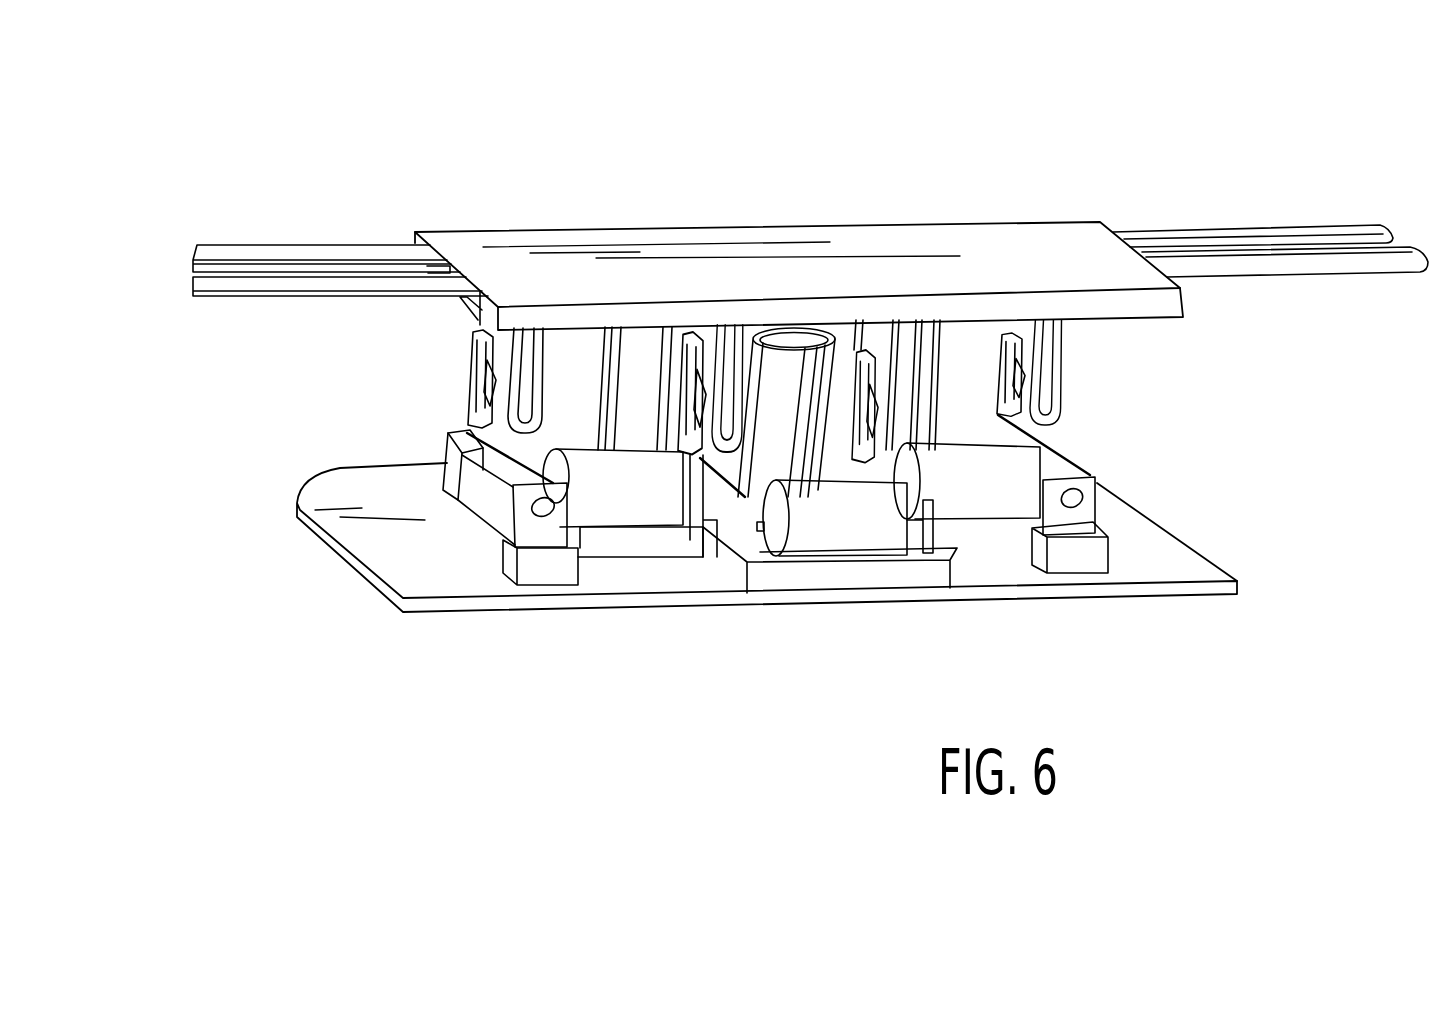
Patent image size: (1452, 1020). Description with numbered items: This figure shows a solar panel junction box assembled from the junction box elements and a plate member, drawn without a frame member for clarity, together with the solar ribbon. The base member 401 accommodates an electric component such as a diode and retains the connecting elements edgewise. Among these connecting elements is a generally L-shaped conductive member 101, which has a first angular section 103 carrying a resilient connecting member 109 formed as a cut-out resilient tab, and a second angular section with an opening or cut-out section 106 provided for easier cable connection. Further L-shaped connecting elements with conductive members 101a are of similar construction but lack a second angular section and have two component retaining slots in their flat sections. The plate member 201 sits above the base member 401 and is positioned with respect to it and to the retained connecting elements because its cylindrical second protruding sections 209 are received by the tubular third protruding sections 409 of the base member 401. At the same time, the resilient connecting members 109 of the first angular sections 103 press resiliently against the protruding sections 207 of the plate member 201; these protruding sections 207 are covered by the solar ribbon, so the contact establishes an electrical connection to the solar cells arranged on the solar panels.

The plate member 201 is at (1043, 248).
The first angular section 103 is at (465, 383).
The resilient connecting member 109 is at (473, 473).
The protruding section 207 is at (508, 432).
The opening or cut-out section 106 is at (541, 513).
The conductive member 101 is at (578, 515).
The conductive member 101a is at (722, 508).
The third protruding section 409 is at (788, 421).
The second protruding section 209 is at (830, 347).
The base member 401 is at (353, 572).